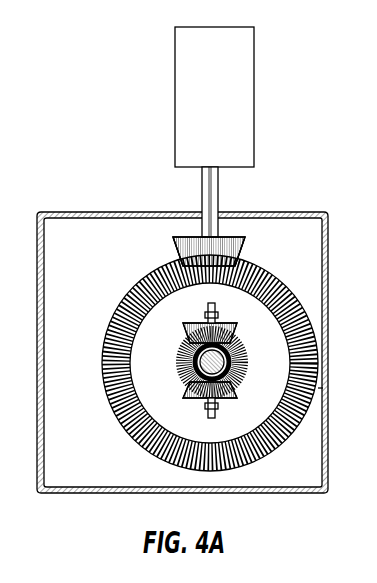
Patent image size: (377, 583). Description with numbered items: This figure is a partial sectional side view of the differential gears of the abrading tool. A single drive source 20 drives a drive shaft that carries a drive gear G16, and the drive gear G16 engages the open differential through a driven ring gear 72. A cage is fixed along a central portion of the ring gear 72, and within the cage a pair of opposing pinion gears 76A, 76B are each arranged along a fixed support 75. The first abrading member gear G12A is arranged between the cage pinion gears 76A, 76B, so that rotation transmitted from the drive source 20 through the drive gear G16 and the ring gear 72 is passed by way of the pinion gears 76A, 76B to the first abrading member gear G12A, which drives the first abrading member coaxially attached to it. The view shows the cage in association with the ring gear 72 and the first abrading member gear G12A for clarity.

The drive source 20 is at (183, 93).
The drive gear G16 is at (185, 239).
The first abrading member gear G12A is at (176, 368).
The driven ring gear 72 is at (124, 441).
The fixed support 75 is at (205, 314).
The pinion gear 76A is at (216, 312).
The pinion gear 76B is at (216, 408).